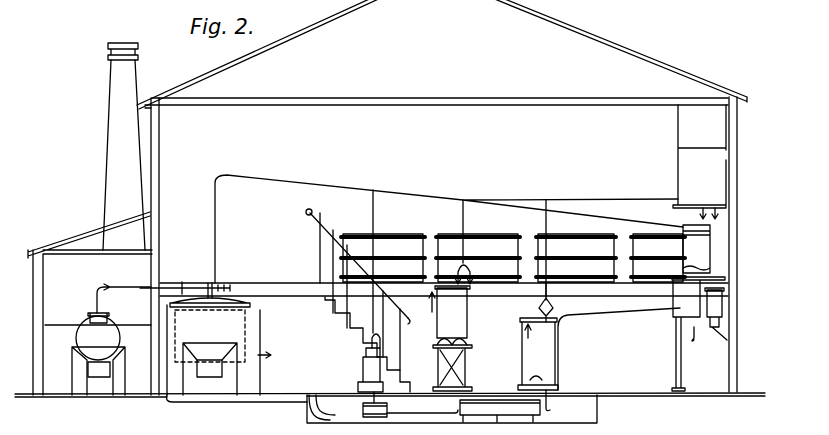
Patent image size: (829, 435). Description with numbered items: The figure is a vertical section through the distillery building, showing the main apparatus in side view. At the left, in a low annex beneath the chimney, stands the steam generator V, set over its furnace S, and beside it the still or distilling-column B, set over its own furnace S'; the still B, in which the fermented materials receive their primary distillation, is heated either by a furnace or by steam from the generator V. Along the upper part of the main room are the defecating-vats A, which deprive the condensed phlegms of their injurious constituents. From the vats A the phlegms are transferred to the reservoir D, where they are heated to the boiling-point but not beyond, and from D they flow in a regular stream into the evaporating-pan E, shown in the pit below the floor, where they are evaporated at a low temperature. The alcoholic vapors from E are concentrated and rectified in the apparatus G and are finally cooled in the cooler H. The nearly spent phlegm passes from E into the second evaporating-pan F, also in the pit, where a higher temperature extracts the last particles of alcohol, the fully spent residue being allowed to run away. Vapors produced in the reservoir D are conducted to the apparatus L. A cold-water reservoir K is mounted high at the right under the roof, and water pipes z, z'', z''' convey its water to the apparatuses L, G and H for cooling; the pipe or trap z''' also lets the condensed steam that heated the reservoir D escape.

The defecating-vats A is at (513, 258).
The still or distilling-column B is at (237, 350).
The generator V is at (111, 339).
The furnace S is at (99, 369).
The furnace S' is at (209, 368).
The cooler H is at (451, 328).
The concentrating and rectifying apparatus G is at (538, 354).
The evaporating-pan F is at (388, 409).
The evaporating-pan E is at (500, 411).
The reservoir D is at (698, 334).
The apparatus L is at (716, 314).
The cold-water reservoir K is at (699, 162).
The pipe z is at (449, 252).
The pipe z'' is at (619, 344).
The pipe z''' is at (700, 340).